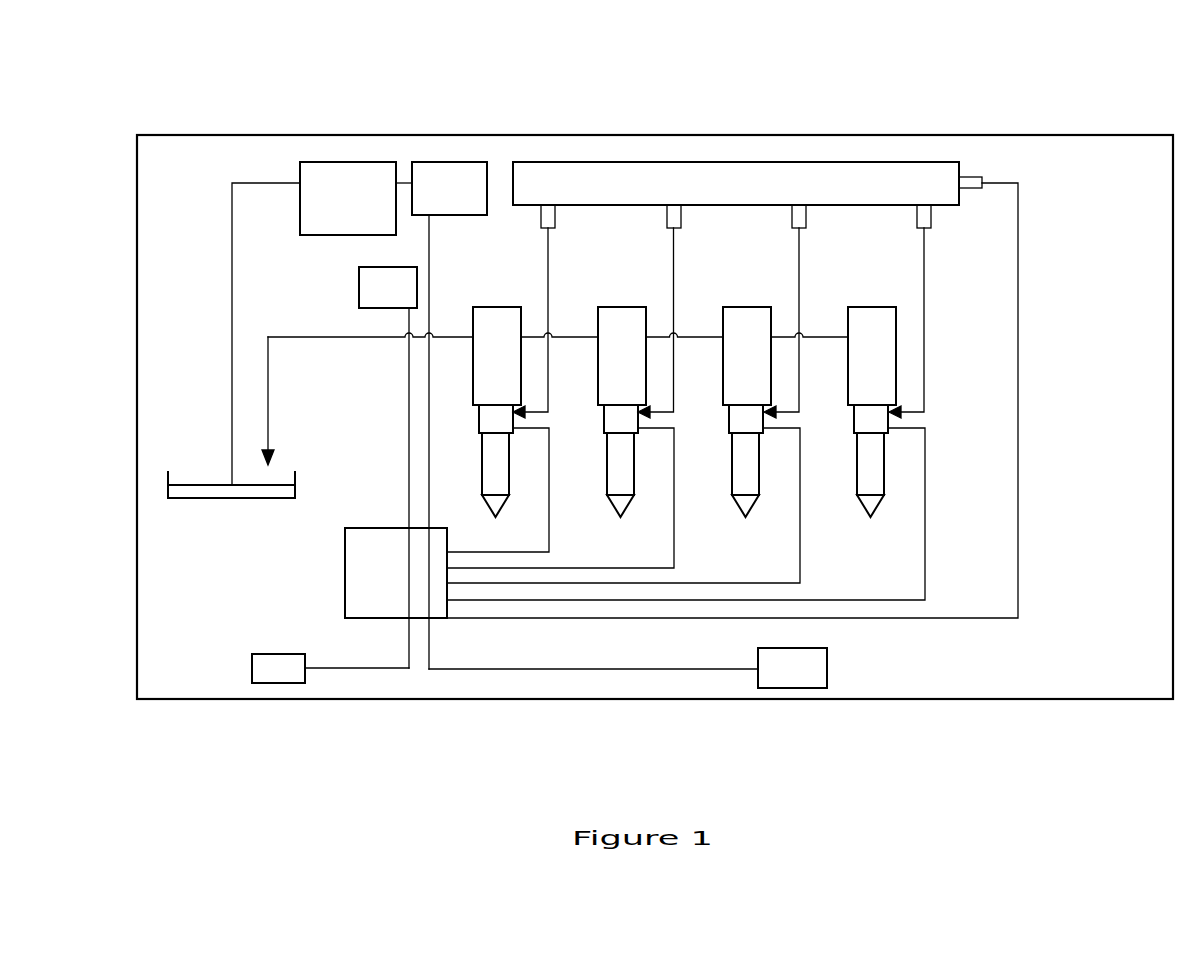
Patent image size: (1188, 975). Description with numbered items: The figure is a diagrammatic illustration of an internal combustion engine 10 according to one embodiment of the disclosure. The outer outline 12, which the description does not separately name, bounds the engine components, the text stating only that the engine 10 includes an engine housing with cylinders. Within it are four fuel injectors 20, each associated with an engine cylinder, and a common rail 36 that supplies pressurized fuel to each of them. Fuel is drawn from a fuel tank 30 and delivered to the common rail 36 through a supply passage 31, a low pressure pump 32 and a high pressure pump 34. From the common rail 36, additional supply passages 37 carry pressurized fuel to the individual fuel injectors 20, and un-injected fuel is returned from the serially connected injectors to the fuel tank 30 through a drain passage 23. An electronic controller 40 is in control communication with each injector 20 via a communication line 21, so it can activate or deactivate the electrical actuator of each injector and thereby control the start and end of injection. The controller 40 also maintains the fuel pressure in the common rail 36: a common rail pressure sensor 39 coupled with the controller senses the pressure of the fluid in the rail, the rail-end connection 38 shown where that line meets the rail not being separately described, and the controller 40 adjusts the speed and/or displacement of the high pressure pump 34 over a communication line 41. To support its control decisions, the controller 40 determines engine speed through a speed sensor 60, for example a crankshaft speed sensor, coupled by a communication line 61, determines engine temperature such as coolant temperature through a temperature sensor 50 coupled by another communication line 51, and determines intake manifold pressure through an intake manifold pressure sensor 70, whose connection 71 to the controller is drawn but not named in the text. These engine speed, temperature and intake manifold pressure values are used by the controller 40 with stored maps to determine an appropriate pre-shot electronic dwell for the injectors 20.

The engine 10 is at (155, 98).
The engine 12 is at (875, 135).
The fuel injector 20 is at (733, 322).
The communication line 21 is at (800, 570).
The drain passage 23 is at (358, 337).
The fuel tank 30 is at (168, 477).
The supply passage 31 is at (232, 298).
The low pressure pump 32 is at (355, 162).
The high pressure pump 34 is at (457, 162).
The common rail 36 is at (635, 162).
The supply passage 37 is at (924, 305).
The rail pressure sensor 38 is at (985, 177).
The common rail pressure sensor 39 is at (1018, 305).
The electronic controller 40 is at (345, 604).
The communication line 41 is at (429, 298).
The temperature sensor 50 is at (827, 678).
The communication line 51 is at (622, 669).
The speed sensor 60 is at (252, 677).
The communication line 61 is at (312, 668).
The intake manifold pressure sensor 70 is at (359, 298).
The regulator line 71 is at (409, 465).